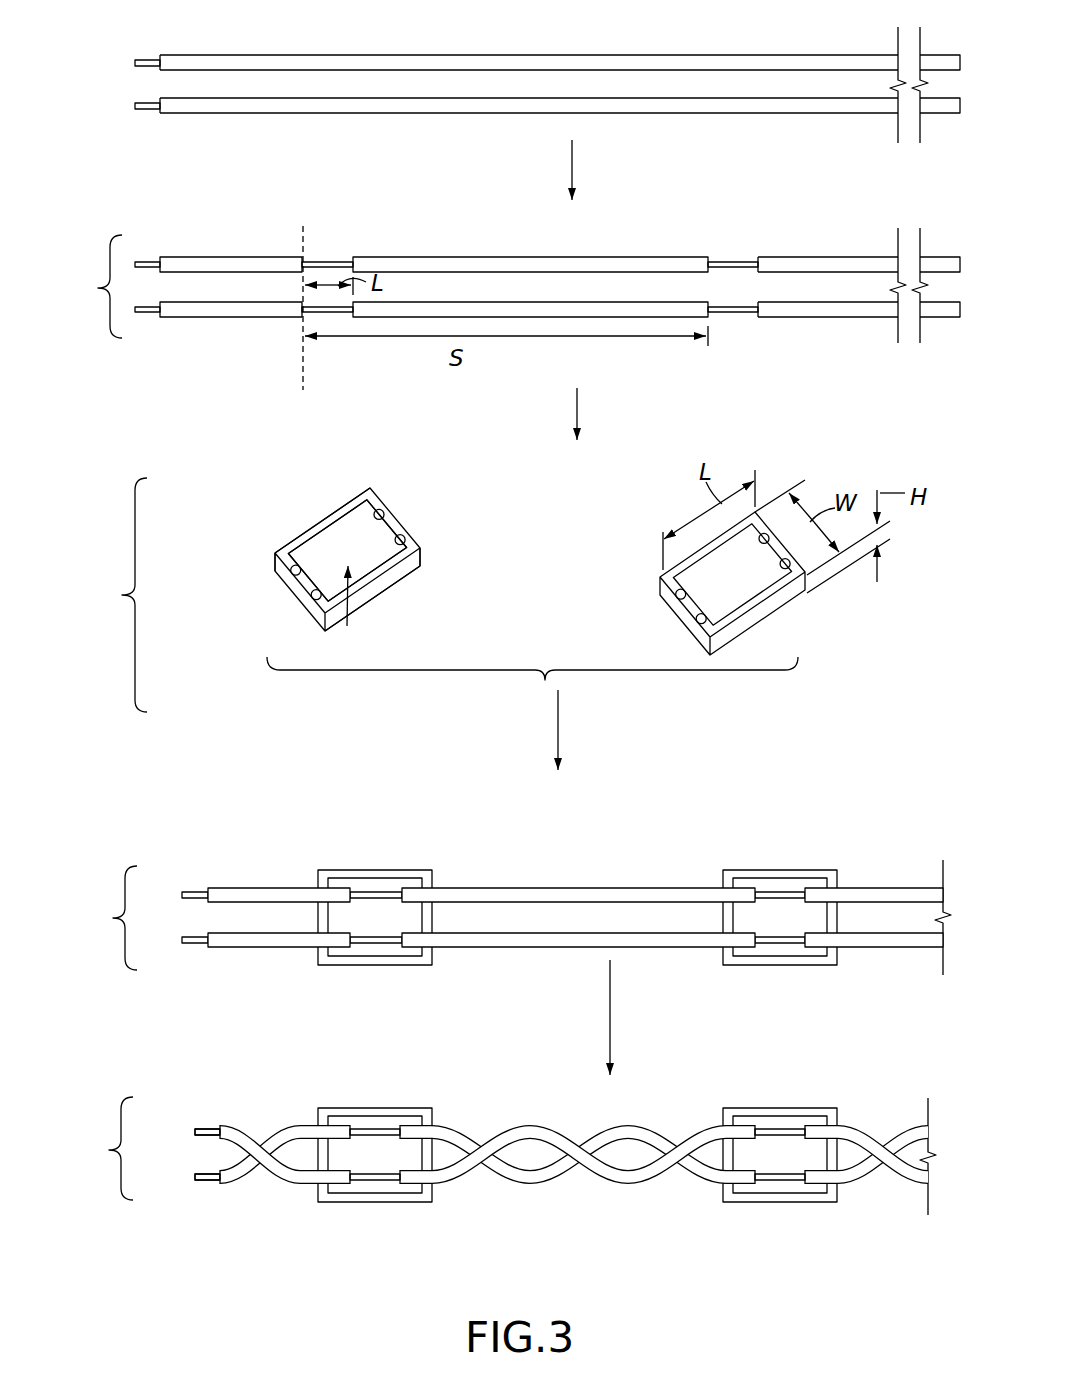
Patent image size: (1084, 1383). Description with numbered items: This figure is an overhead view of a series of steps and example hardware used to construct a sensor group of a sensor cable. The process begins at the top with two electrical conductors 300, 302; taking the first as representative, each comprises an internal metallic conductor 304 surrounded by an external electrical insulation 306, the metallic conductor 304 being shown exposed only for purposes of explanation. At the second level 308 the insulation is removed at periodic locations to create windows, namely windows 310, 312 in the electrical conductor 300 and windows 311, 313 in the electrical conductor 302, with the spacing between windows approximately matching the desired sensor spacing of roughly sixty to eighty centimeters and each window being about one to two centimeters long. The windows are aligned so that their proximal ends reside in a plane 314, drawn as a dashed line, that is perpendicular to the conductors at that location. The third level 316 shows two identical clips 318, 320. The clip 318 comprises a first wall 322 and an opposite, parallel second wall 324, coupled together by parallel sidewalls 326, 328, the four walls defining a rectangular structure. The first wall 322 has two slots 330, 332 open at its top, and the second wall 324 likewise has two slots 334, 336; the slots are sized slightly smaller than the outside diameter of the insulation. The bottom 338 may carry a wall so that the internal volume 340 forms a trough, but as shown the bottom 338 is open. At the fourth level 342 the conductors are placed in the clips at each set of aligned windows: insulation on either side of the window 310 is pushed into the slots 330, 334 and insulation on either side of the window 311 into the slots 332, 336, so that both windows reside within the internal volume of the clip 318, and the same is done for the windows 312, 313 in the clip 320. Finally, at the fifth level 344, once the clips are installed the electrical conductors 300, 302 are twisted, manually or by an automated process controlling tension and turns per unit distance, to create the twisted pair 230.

The twisted pair 230 is at (208, 1197).
The electrical conductor 300 is at (500, 613).
The electrical conductor 302 is at (208, 113).
The metallic conductor 304 is at (137, 62).
The electrical insulation 306 is at (245, 62).
The level 308 is at (81, 286).
The window 310 is at (357, 247).
The window 311 is at (342, 320).
The window 312 is at (738, 248).
The window 313 is at (744, 322).
The plane 314 is at (300, 363).
The level 316 is at (100, 595).
The clip 318 is at (366, 821).
The clip 320 is at (682, 507).
The first wall 322 is at (278, 563).
The second wall 324 is at (421, 545).
The sidewall 326 is at (336, 512).
The sidewall 328 is at (388, 583).
The slot 330 is at (290, 581).
The slot 332 is at (310, 598).
The slot 334 is at (383, 507).
The slot 336 is at (407, 537).
The bottom 338 is at (323, 563).
The internal volume 340 is at (347, 626).
The level 342 is at (89, 918).
The level 344 is at (91, 1148).